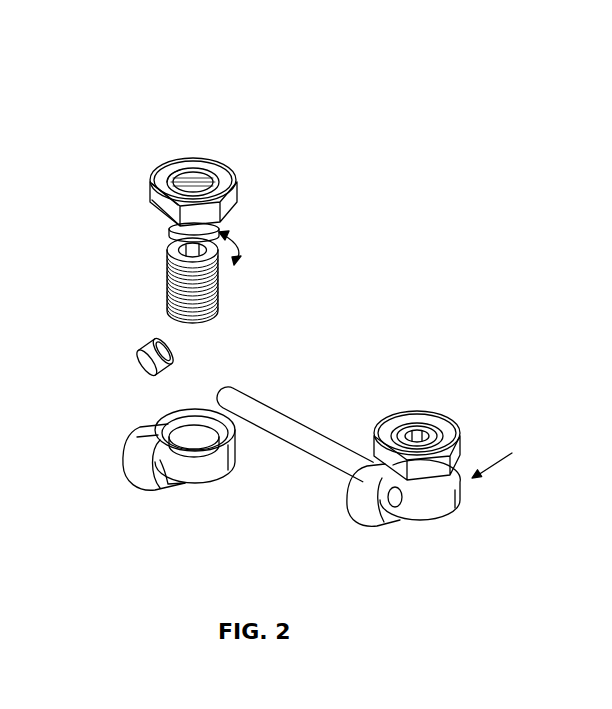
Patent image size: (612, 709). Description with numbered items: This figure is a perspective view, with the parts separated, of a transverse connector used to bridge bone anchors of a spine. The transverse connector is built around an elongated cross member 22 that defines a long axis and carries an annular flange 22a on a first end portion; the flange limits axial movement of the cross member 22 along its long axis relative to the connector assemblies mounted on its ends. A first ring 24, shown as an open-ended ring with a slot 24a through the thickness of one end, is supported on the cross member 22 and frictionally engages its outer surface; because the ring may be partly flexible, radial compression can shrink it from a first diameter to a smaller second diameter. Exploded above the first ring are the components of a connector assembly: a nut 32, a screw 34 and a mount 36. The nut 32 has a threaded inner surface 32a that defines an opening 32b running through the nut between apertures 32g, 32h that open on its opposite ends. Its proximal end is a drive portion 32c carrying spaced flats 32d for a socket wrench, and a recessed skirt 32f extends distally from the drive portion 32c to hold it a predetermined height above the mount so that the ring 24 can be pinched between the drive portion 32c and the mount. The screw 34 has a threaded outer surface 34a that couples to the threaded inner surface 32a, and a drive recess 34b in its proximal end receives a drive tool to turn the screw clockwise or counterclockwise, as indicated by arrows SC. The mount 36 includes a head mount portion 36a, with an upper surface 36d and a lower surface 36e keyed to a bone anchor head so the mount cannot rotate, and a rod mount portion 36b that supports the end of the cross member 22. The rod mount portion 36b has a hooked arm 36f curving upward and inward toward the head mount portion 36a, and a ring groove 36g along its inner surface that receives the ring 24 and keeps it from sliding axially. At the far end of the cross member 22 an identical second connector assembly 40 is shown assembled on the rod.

The cross member 22 is at (277, 420).
The annular flange 22a is at (382, 503).
The first ring 24 is at (147, 362).
The slot 24a is at (145, 336).
The nut 32 is at (218, 165).
The threaded inner surface 32a is at (198, 177).
The opening 32b is at (189, 184).
The drive portion 32c is at (243, 180).
The flats 32d is at (160, 208).
The skirt 32f is at (173, 232).
The aperture 32g is at (167, 183).
The aperture 32h is at (175, 235).
The screw 34 is at (226, 308).
The threaded outer surface 34a is at (172, 297).
The drive recess 34b is at (200, 253).
The mount 36 is at (210, 491).
The head mount portion 36a is at (227, 463).
The rod mount portion 36b is at (136, 468).
The upper surface 36d is at (173, 413).
The lower surface 36e is at (203, 437).
The hooked arm 36f is at (137, 437).
The ring groove 36g is at (166, 470).
The second connector assembly 40 is at (502, 461).
The arrows Sc SC is at (241, 248).